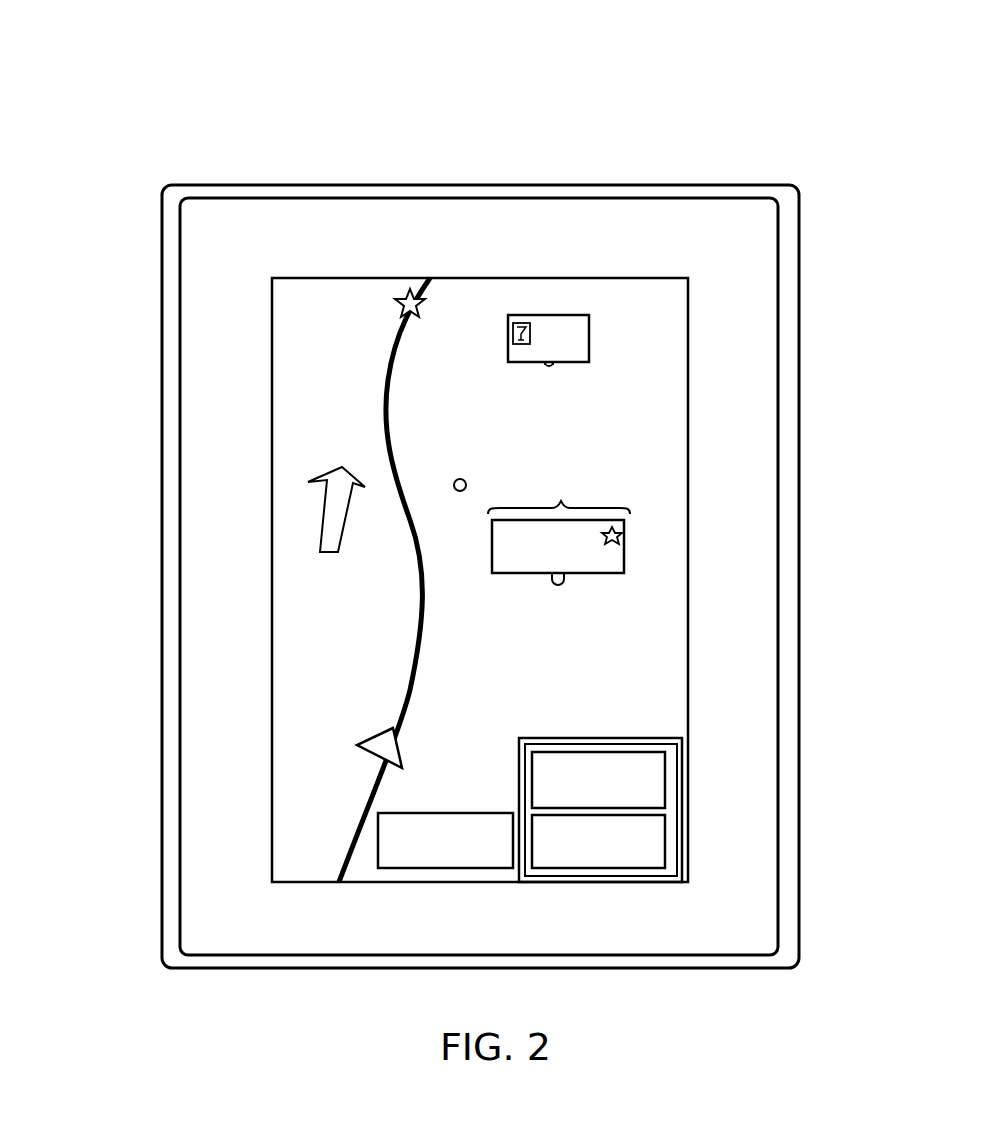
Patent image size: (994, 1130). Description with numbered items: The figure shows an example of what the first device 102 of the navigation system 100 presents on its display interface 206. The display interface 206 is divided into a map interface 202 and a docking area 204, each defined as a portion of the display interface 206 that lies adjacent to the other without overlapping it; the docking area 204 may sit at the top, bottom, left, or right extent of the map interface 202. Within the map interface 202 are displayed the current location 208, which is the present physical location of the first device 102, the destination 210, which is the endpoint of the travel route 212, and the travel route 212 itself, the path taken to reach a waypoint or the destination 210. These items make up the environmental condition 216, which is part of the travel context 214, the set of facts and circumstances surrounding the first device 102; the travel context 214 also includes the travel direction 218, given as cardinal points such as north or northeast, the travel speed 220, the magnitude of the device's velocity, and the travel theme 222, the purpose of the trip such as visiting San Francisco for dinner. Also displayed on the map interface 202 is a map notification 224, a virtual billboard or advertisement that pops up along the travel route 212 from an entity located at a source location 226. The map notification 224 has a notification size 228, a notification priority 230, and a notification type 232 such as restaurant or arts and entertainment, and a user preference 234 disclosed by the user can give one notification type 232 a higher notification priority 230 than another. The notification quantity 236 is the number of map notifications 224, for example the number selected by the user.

The navigation system 100 is at (232, 58).
The first device 102 is at (243, 182).
The map interface 202 is at (660, 298).
The docking area 204 is at (210, 262).
The display interface 206 is at (325, 194).
The current location 208 is at (385, 755).
The destination 210 is at (411, 296).
The travel route 212 is at (383, 418).
The travel context 214 is at (653, 733).
The environmental condition 216 is at (676, 800).
The travel direction 218 is at (335, 503).
The travel speed 220 is at (666, 770).
The travel theme 222 is at (657, 840).
The map notification 224 is at (578, 332).
The source location 226 is at (462, 479).
The notification size 228 is at (561, 501).
The notification priority 230 is at (624, 537).
The notification type 232 is at (524, 318).
The user preference 234 is at (378, 835).
The notification quantity 236 is at (600, 569).